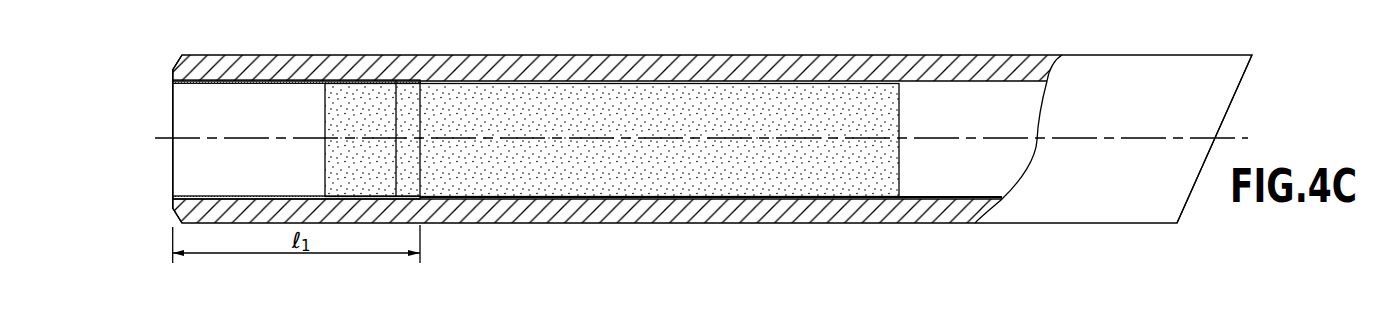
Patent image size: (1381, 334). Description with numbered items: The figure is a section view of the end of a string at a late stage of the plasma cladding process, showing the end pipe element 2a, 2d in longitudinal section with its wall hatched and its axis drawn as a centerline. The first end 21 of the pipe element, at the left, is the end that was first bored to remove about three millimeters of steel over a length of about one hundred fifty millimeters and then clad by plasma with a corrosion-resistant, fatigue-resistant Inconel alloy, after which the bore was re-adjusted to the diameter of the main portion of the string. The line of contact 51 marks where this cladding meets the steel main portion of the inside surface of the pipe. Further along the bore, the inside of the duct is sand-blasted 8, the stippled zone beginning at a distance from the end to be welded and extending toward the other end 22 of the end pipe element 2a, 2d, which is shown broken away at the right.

The end pipe element 2a is at (711, 121).
The end pipe element 2d is at (695, 68).
The line of contact 51 is at (196, 81).
The sand-blasted zone 8 is at (510, 103).
The first end 21 is at (163, 180).
The other end 22 is at (1258, 103).